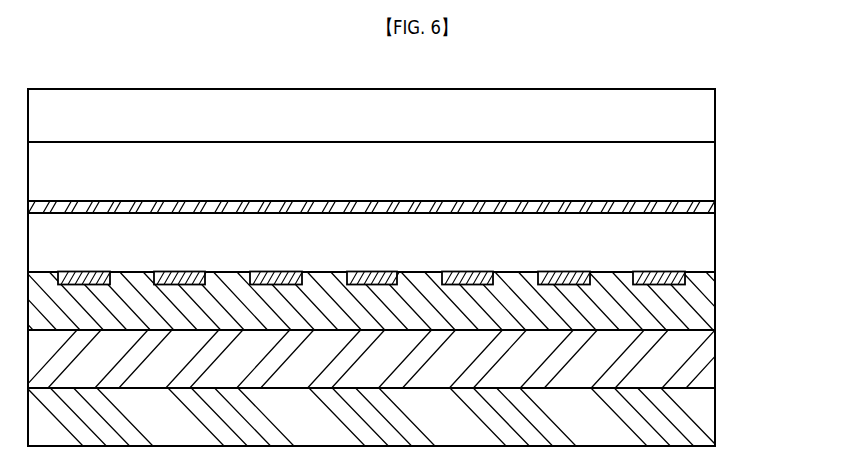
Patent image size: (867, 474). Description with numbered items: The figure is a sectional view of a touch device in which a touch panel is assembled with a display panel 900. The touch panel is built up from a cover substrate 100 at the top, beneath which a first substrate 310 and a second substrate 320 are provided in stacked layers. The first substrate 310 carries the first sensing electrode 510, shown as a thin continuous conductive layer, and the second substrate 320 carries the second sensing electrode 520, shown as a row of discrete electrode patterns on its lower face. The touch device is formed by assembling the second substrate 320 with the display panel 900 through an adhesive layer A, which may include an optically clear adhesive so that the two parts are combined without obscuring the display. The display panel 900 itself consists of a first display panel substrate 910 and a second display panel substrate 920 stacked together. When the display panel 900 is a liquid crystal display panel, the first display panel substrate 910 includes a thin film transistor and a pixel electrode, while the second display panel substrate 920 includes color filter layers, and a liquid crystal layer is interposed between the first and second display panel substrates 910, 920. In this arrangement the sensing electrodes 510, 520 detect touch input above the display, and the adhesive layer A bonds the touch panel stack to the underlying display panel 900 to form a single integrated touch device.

The cover substrate 100 is at (706, 118).
The first substrate 310 is at (706, 172).
The first sensing electrode 510 is at (707, 207).
The second substrate 320 is at (706, 244).
The second sensing electrode 520 is at (687, 275).
The adhesive layer A is at (705, 308).
The second display panel substrate 920 is at (706, 357).
The first display panel substrate 910 is at (706, 411).
The display panel 900 is at (429, 388).